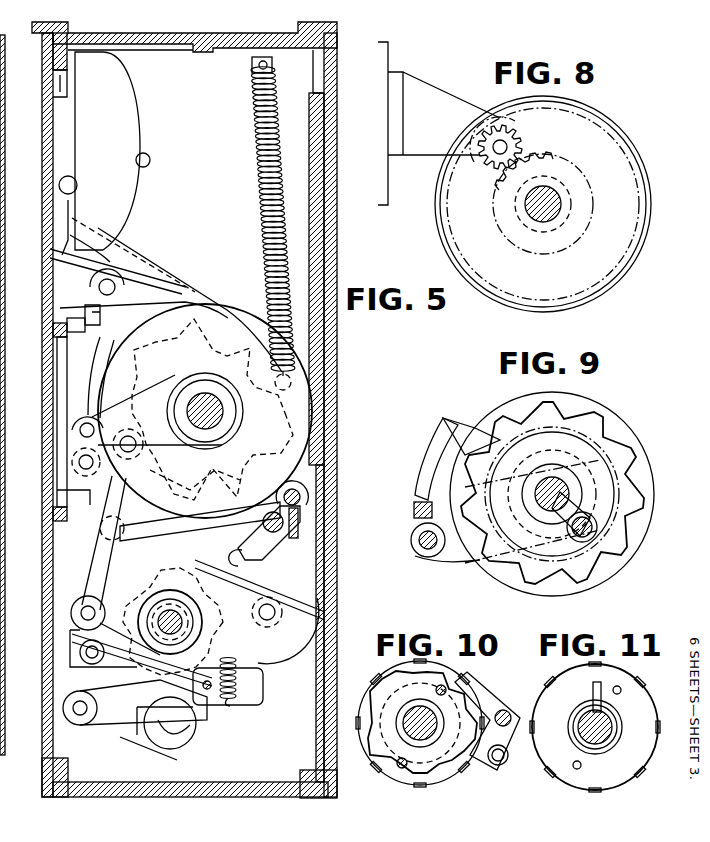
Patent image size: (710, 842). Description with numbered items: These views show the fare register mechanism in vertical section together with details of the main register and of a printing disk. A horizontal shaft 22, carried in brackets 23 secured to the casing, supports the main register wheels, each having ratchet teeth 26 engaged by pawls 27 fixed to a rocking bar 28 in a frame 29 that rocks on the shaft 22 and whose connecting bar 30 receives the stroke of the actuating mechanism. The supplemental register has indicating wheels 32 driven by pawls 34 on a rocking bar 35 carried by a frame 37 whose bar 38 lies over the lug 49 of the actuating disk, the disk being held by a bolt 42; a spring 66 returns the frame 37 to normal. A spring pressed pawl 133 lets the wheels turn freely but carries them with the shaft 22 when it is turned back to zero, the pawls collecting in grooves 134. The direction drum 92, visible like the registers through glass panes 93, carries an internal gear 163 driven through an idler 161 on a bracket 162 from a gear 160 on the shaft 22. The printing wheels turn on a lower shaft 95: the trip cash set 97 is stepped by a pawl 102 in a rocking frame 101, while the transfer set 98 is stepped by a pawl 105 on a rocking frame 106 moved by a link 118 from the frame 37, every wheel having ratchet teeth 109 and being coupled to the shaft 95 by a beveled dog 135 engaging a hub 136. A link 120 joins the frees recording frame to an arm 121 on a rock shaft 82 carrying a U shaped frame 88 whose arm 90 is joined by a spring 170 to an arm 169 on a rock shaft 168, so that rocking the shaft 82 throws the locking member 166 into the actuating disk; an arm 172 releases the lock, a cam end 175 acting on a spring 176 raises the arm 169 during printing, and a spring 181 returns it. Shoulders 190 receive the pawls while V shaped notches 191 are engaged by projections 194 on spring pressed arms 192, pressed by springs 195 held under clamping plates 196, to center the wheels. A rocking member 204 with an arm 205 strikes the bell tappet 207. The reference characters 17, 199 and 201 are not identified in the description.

In FIG. 5, the housing 17 is at (0, 83).
In FIG. 5, the horizontal shaft 22 is at (210, 428).
In FIG. 8, the horizontal shaft 22 is at (552, 208).
In FIG. 9, the horizontal shaft 22 is at (552, 491).
In FIG. 5, the brackets 23 is at (178, 276).
In FIG. 9, the ratchet teeth 26 is at (598, 426).
In FIG. 9, the pawls 27 is at (445, 430).
In FIG. 9, the rocking bar 28 is at (415, 508).
In FIG. 9, the frame 29 is at (412, 528).
In FIG. 9, the connecting bar 30 is at (418, 545).
In FIG. 5, the indicating wheels 32 is at (119, 315).
In FIG. 5, the pawls 34 is at (103, 377).
In FIG. 5, the rocking bar 35 is at (92, 428).
In FIG. 5, the frame 37 is at (219, 454).
In FIG. 5, the connecting bar 38 is at (78, 461).
In FIG. 5, the bolt 42 is at (78, 400).
In FIG. 5, the lug 49 is at (77, 504).
In FIG. 5, the spring 66 is at (262, 205).
In FIG. 5, the rock shaft 82 is at (285, 607).
In FIG. 5, the U shaped frame 88 is at (300, 538).
In FIG. 5, the arm 90 is at (270, 535).
In FIG. 8, the drum 92 is at (612, 288).
In FIG. 5, the glass panes 93 is at (0, 217).
In FIG. 5, the horizontal shaft 95 is at (170, 612).
In FIG. 10, the horizontal shaft 95 is at (445, 732).
In FIG. 11, the horizontal shaft 95 is at (598, 756).
In FIG. 10, the printing wheels 97 is at (398, 782).
In FIG. 11, the printing wheels 97 is at (550, 770).
In FIG. 5, the printing wheels 98 is at (221, 552).
In FIG. 10, the rocking frame 101 is at (492, 764).
In FIG. 10, the pawl 102 is at (485, 700).
In FIG. 5, the pawl 105 is at (161, 614).
In FIG. 5, the rocking frame 106 is at (88, 654).
In FIG. 10, the ratchet disk 109 is at (390, 692).
In FIG. 5, the link 118 is at (96, 528).
In FIG. 5, the link 120 is at (128, 551).
In FIG. 5, the arm 121 is at (200, 521).
In FIG. 9, the spring pressed pawl 133 is at (594, 522).
In FIG. 9, the slots 134 is at (575, 490).
In FIG. 11, the spring pressed dog 135 is at (592, 690).
In FIG. 10, the hub 136 is at (432, 722).
In FIG. 11, the hub 136 is at (612, 730).
In FIG. 8, the gear 160 is at (568, 172).
In FIG. 8, the idler 161 is at (488, 168).
In FIG. 8, the bracket 162 is at (439, 123).
In FIG. 8, the internal gear 163 is at (528, 112).
In FIG. 5, the locking member 166 is at (62, 600).
In FIG. 5, the rock shaft 168 is at (80, 716).
In FIG. 5, the arm 169 is at (135, 702).
In FIG. 5, the spring 170 is at (235, 665).
In FIG. 5, the arm 172 is at (178, 752).
In FIG. 5, the cam shaped end 175 is at (196, 736).
In FIG. 5, the spring 176 is at (135, 745).
In FIG. 5, the spring 181 is at (142, 660).
In FIG. 9, the shoulders 190 is at (530, 400).
In FIG. 9, the V shaped notches 191 is at (567, 410).
In FIG. 5, the spring pressed pivoted arm 192 is at (196, 300).
In FIG. 5, the V shaped projections 194 is at (205, 411).
In FIG. 5, the springs 195 is at (145, 272).
In FIG. 5, the clamping plates 196 is at (96, 252).
In FIG. 5, the pin 199 is at (306, 500).
In FIG. 5, the spring 201 is at (232, 708).
In FIG. 5, the rocking member 204 is at (55, 344).
In FIG. 5, the arm 205 is at (55, 518).
In FIG. 5, the tappet 207 is at (88, 331).